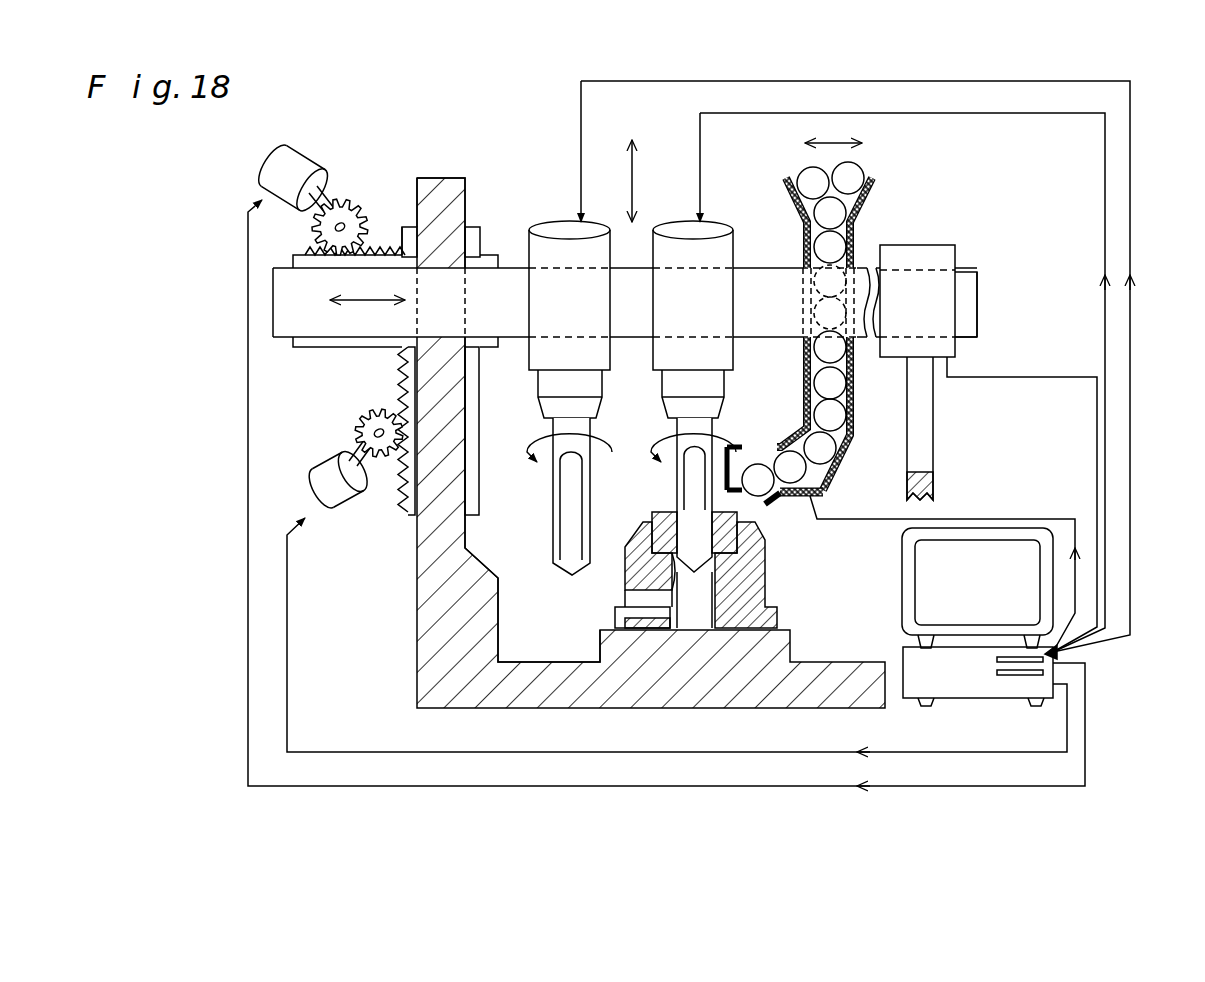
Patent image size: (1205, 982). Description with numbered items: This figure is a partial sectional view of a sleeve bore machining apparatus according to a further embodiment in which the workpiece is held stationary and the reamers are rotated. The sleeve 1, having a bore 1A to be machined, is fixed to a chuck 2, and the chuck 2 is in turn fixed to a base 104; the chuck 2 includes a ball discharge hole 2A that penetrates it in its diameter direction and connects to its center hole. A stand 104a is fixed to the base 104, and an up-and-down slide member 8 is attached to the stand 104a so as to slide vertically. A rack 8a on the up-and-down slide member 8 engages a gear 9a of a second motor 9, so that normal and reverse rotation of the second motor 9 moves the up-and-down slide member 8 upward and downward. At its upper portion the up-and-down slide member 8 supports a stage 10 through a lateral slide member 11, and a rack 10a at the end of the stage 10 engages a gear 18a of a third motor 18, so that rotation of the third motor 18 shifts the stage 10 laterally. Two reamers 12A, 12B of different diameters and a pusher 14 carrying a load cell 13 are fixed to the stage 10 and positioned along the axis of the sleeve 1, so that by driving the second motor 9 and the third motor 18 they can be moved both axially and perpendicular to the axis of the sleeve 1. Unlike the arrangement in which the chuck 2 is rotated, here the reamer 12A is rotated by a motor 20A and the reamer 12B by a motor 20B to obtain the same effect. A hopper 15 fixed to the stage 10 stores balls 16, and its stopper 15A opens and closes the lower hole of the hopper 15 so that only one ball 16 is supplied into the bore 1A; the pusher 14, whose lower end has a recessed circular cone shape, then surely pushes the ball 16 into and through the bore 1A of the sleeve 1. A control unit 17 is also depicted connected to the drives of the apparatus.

The sleeve 1 is at (737, 527).
The bore 1A is at (630, 580).
The chuck 2 is at (755, 588).
The ball discharge hole 2A is at (613, 613).
The up-and-down slide member 8 is at (398, 364).
The rack 8a is at (400, 482).
The second motor 9 is at (322, 478).
The gear 9a is at (357, 425).
The stage 10 is at (774, 268).
The rack 10a is at (325, 258).
The lateral slide member 11 is at (387, 262).
The reamer 12A is at (690, 488).
The reamer 12B is at (568, 532).
The load cell 13 is at (950, 240).
The pusher 14 is at (930, 435).
The hopper 15 is at (860, 203).
The stopper 15A is at (830, 498).
The ball 16 is at (812, 403).
The controller 17 is at (1043, 600).
The third motor 18 is at (280, 172).
The gear 18a is at (347, 195).
The motor 20A is at (565, 230).
The motor 20B is at (687, 223).
The base 104 is at (708, 690).
The stand 104a is at (430, 608).